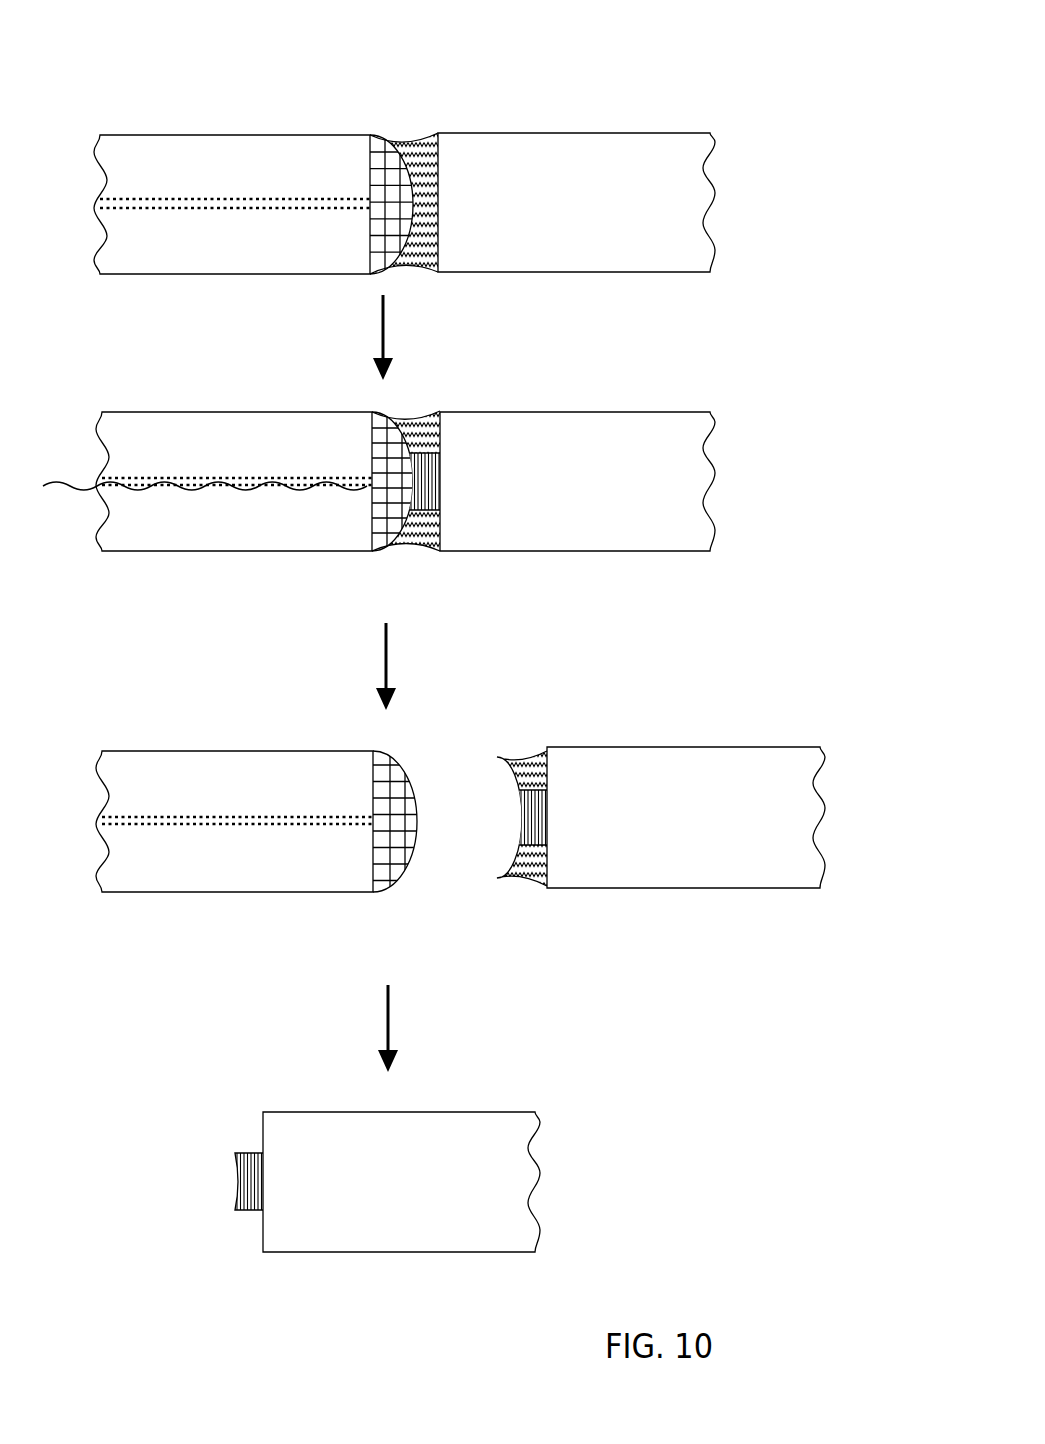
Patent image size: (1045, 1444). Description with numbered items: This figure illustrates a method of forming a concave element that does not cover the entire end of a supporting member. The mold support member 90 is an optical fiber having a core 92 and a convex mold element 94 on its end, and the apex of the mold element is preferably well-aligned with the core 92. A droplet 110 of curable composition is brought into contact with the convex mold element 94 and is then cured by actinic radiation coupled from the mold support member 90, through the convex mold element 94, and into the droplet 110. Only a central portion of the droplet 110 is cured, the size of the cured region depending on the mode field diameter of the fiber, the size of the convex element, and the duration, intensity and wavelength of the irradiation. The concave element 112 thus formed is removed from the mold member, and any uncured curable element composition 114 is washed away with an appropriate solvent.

The mold support member 90 is at (169, 134).
The core 92 is at (175, 206).
The convex mold element 94 is at (380, 136).
The droplet 110 is at (423, 138).
The concave element 112 is at (519, 832).
The uncured curable element composition 114 is at (527, 758).